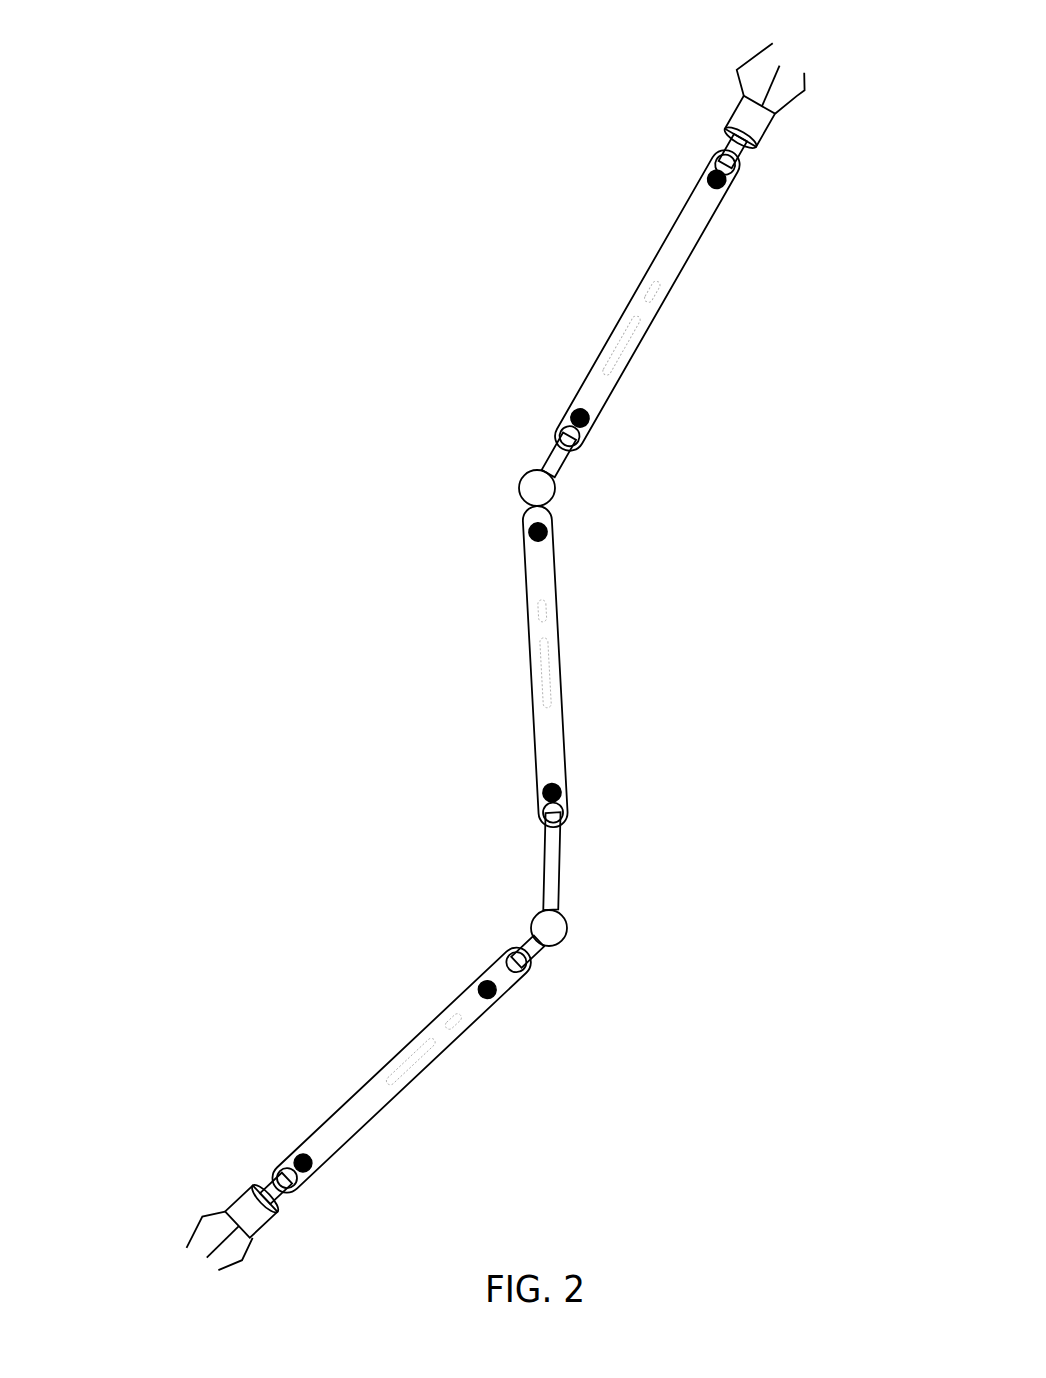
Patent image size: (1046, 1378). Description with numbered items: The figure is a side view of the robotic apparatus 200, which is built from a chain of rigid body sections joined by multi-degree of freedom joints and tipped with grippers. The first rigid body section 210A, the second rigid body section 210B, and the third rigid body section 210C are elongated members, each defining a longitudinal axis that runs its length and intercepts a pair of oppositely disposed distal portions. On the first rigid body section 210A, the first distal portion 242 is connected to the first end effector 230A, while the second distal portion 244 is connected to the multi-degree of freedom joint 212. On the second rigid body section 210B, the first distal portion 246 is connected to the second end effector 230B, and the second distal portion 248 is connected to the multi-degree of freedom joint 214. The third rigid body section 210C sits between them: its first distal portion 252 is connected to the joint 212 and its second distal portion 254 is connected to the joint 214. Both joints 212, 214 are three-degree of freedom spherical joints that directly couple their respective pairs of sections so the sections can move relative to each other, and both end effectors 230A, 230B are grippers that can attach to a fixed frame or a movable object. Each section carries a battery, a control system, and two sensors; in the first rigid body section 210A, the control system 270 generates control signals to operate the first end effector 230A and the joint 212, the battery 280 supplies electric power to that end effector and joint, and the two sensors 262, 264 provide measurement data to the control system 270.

The robotic apparatus 200 is at (461, 647).
The first rigid body section 210A is at (358, 1030).
The second rigid body section 210B is at (588, 263).
The third rigid body section 210C is at (488, 668).
The multi-degree of freedom joint 212 is at (575, 925).
The multi-degree of freedom joint 214 is at (557, 491).
The first end effector 230A is at (183, 1207).
The second end effector 230B is at (718, 57).
The first distal portion 242 is at (280, 1172).
The second distal portion 244 is at (503, 952).
The first distal portion 246 is at (708, 154).
The second distal portion 248 is at (548, 428).
The first distal portion 252 is at (570, 820).
The second distal portion 254 is at (518, 505).
The sensor 262 is at (312, 1173).
The sensor 264 is at (503, 988).
The control system 270 is at (463, 1030).
The battery 280 is at (417, 1070).